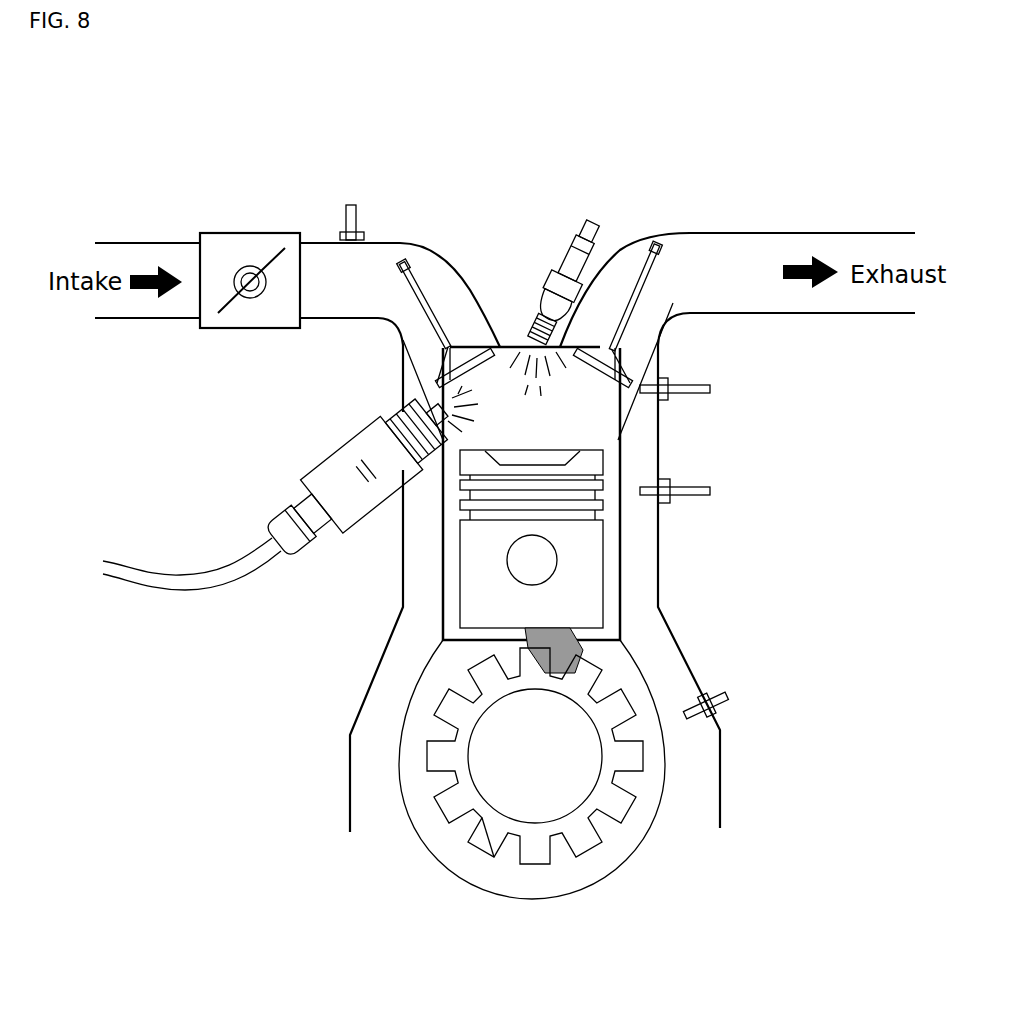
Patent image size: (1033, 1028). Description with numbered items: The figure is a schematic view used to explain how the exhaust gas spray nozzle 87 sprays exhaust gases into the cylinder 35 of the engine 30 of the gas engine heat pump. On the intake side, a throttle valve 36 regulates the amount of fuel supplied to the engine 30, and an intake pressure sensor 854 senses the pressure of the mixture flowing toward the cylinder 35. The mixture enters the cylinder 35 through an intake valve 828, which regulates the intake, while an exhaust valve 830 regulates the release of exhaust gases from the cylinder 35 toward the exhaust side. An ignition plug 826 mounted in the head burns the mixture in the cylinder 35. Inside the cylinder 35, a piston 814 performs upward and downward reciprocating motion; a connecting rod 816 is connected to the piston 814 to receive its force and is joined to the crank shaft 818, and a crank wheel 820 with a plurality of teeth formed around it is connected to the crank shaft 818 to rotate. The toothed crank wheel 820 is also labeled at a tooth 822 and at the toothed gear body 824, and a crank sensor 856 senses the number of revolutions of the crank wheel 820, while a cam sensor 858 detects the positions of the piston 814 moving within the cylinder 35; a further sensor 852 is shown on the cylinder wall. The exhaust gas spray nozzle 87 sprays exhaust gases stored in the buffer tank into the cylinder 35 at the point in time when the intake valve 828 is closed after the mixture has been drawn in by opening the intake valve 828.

The engine 30 is at (294, 609).
The cylinder 35 is at (604, 471).
The throttle valve 36 is at (250, 204).
The exhaust gas spray nozzle 87 is at (290, 481).
The piston 814 is at (641, 539).
The connecting rod 816 is at (657, 650).
The crank shaft 818 is at (614, 810).
The crank wheel 820 is at (532, 813).
The gear tooth 822 is at (446, 886).
The crankshaft gear 824 is at (623, 756).
The ignition plug 826 is at (563, 244).
The intake valve 828 is at (457, 264).
The exhaust valve 830 is at (643, 269).
The sensor 852 is at (743, 487).
The intake pressure sensor 854 is at (369, 168).
The crank sensor 856 is at (764, 703).
The cam sensor 858 is at (743, 386).